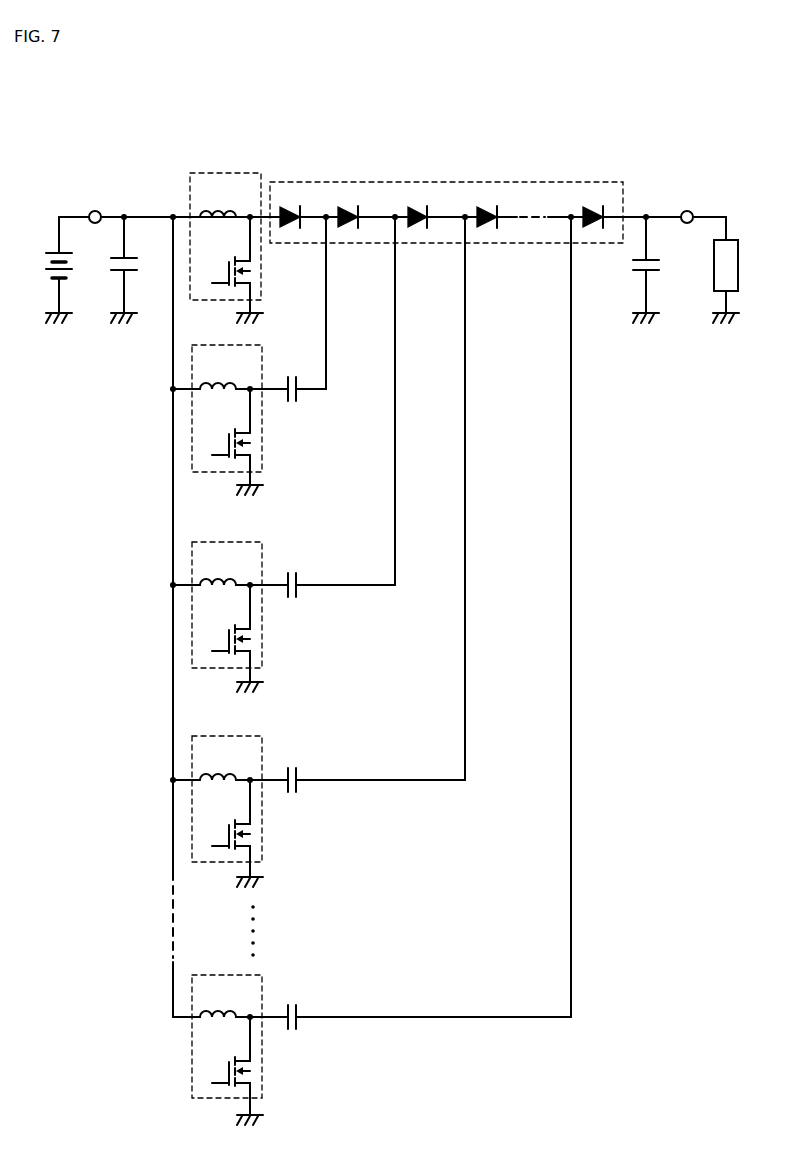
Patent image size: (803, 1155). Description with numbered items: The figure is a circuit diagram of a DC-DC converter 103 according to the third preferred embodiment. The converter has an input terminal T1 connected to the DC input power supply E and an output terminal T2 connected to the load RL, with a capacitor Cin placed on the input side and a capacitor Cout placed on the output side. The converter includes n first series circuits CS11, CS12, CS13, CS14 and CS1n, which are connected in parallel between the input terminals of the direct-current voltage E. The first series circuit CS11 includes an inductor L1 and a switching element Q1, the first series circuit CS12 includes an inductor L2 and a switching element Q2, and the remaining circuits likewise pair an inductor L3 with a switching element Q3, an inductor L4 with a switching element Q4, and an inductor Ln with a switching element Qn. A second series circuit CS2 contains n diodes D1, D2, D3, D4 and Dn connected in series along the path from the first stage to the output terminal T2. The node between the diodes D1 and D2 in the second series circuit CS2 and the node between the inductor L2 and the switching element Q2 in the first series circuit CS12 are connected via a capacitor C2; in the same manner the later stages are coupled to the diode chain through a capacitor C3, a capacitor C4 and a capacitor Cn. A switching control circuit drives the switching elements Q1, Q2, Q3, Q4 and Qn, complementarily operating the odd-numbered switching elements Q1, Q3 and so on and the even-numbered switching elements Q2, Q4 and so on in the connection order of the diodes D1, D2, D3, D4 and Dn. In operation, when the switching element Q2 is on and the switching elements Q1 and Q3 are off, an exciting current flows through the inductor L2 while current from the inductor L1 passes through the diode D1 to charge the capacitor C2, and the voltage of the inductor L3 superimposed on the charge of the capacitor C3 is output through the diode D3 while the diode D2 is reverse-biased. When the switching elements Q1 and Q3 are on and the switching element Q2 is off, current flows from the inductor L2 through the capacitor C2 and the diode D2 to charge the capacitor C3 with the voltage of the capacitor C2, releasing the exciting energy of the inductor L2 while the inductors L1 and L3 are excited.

The DC-DC converter 103 is at (709, 113).
The input terminal T1 is at (94, 205).
The output terminal T2 is at (686, 205).
The DC input power supply E is at (50, 270).
The capacitor Cin is at (140, 270).
The capacitor Cout is at (668, 270).
The load RL is at (737, 240).
The first series circuit CS11 is at (248, 171).
The first series circuit CS12 is at (263, 345).
The first series circuit CS13 is at (263, 542).
The first series circuit CS14 is at (263, 736).
The first series circuit CS1n is at (263, 975).
The second series circuit CS2 is at (535, 181).
The inductor L1 is at (225, 199).
The inductor L2 is at (225, 372).
The inductor L3 is at (225, 568).
The inductor L4 is at (225, 763).
The inductor Ln is at (225, 1000).
The switching element Q1 is at (234, 270).
The switching element Q2 is at (234, 442).
The switching element Q3 is at (234, 638).
The switching element Q4 is at (234, 833).
The switching element Qn is at (234, 1071).
The capacitor C2 is at (293, 378).
The capacitor C3 is at (293, 574).
The capacitor C4 is at (293, 769).
The capacitor Cn is at (293, 1006).
The diode D1 is at (292, 206).
The diode D2 is at (350, 206).
The diode D3 is at (419, 206).
The diode D4 is at (488, 206).
The diode Dn is at (594, 206).